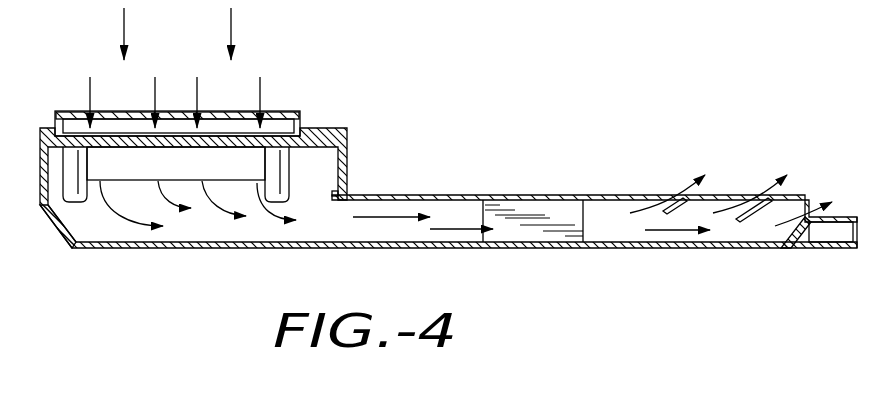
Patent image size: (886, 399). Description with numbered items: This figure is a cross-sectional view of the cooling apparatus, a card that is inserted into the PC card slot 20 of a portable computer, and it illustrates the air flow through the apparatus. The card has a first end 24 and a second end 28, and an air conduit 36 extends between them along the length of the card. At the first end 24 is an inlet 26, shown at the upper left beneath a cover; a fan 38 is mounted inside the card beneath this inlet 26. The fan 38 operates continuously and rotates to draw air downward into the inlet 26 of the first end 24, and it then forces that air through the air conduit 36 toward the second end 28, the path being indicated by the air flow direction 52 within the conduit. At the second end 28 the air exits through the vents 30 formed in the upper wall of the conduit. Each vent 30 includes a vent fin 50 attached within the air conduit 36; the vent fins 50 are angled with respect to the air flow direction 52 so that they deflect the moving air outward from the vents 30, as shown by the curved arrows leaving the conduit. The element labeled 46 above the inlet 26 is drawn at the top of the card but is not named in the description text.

The PC card slot 20 is at (732, 248).
The first end 24 is at (72, 248).
The inlet 26 is at (64, 112).
The second end 28 is at (308, 30).
The vents 30 is at (660, 196).
The air conduit 36 is at (352, 230).
The fan 38 is at (253, 168).
The filter 46 is at (240, 112).
The vent fin 50 is at (672, 192).
The air flow direction 52 is at (392, 216).